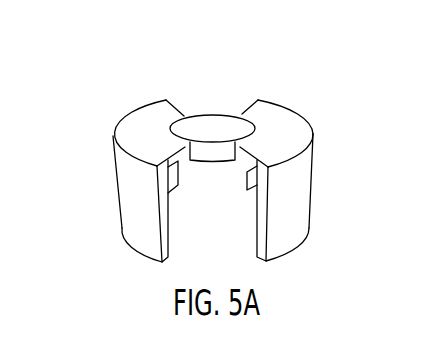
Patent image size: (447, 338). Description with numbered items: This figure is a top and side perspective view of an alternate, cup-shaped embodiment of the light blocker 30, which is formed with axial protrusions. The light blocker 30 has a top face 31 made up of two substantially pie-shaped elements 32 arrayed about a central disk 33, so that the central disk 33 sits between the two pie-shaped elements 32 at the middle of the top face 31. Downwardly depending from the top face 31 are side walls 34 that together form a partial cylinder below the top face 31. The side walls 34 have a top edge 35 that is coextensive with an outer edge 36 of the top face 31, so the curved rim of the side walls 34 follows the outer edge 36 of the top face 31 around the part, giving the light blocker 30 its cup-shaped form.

The light blocker 30 is at (82, 121).
The top face 31 is at (288, 144).
The pie-shaped elements 32 is at (303, 127).
The central disk 33 is at (223, 144).
The side walls 34 is at (295, 222).
The top edge 35 is at (303, 152).
The outer edge 36 is at (275, 105).